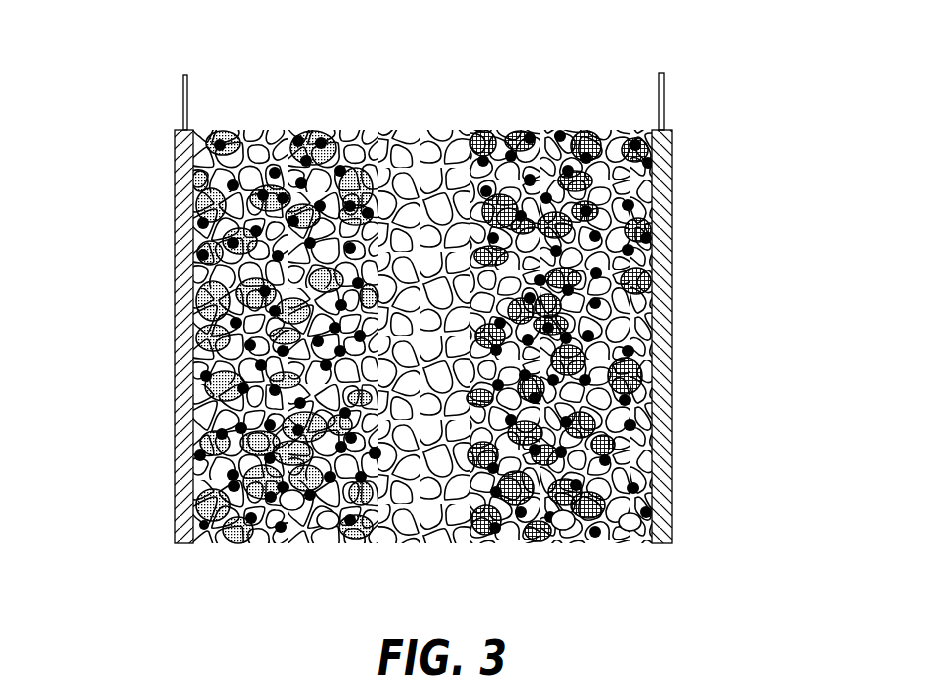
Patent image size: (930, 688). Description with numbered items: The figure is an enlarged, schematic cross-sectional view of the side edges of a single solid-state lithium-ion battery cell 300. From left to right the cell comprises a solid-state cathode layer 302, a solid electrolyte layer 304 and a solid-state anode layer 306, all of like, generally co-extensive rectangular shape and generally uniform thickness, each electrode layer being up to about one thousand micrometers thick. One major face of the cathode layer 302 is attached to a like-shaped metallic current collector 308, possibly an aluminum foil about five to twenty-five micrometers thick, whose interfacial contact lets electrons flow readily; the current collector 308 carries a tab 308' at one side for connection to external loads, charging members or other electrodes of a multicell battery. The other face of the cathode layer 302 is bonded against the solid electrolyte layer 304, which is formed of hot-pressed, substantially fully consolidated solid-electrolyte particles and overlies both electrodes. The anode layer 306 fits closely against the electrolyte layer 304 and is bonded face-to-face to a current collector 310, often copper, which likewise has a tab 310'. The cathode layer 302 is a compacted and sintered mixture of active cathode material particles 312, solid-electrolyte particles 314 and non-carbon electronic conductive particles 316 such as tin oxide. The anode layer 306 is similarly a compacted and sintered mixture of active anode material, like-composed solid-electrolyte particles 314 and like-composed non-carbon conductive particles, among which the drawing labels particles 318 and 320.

The solid-state lithium-ion battery cell 300 is at (630, 56).
The solid-state cathode layer 302 is at (378, 128).
The solid electrolyte layer 304 is at (375, 545).
The solid-state anode layer 306 is at (468, 128).
The current collector 308 is at (130, 336).
The tab 308' is at (132, 96).
The current collector 310 is at (714, 336).
The tab 310' is at (717, 97).
The active cathode material particles 312 is at (240, 527).
The solid-electrolyte particles 314 is at (630, 540).
The non-carbon electronic conductive particles 316 is at (202, 525).
The positive electroactive material particles 318 is at (537, 540).
The conductive additive particles 320 is at (646, 513).